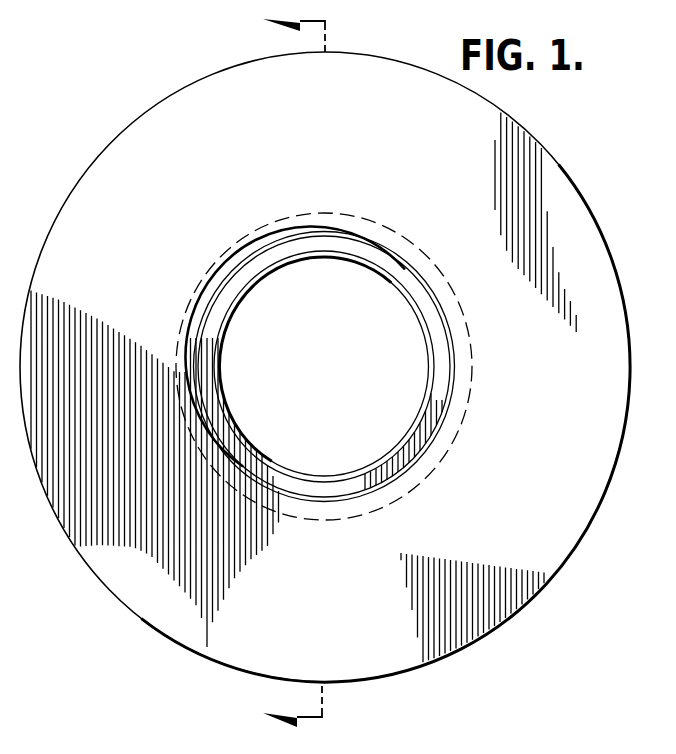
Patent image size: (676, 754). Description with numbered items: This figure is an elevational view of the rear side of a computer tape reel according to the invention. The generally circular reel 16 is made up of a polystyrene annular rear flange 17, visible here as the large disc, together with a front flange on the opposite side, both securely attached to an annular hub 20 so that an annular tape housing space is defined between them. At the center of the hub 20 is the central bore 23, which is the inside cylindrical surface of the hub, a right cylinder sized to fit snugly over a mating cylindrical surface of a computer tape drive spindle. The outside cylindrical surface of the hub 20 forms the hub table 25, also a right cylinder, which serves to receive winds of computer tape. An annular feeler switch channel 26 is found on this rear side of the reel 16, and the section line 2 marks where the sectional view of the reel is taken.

The section line 2- 2 is at (281, 371).
The reel 16 is at (96, 134).
The annular rear flange 17 is at (114, 611).
The annular hub 20 is at (253, 426).
The central bore 23 is at (388, 455).
The hub table 25 is at (474, 348).
The annular feeler switch channel 26 is at (409, 285).